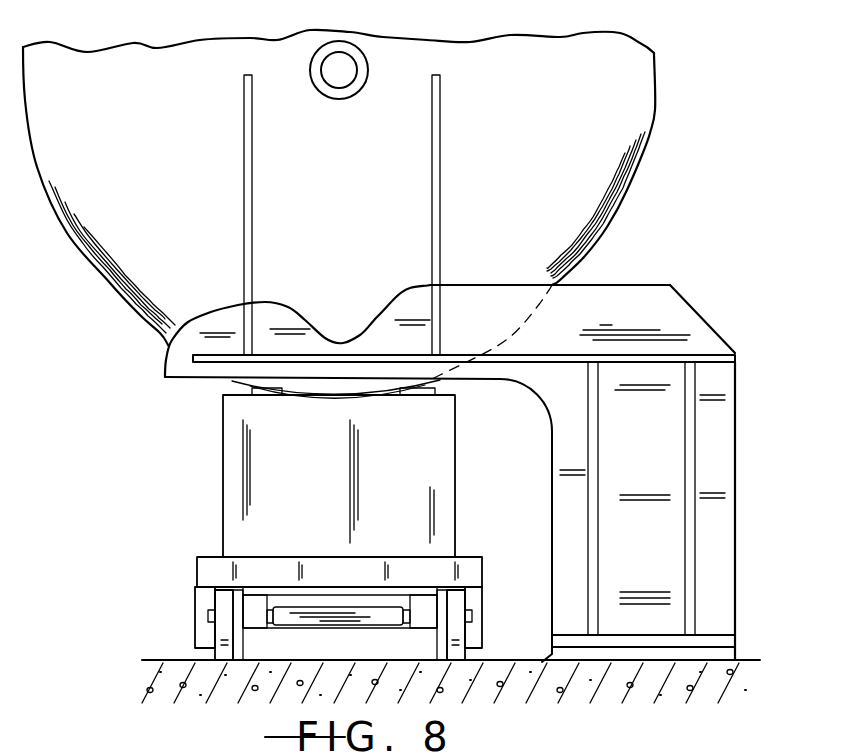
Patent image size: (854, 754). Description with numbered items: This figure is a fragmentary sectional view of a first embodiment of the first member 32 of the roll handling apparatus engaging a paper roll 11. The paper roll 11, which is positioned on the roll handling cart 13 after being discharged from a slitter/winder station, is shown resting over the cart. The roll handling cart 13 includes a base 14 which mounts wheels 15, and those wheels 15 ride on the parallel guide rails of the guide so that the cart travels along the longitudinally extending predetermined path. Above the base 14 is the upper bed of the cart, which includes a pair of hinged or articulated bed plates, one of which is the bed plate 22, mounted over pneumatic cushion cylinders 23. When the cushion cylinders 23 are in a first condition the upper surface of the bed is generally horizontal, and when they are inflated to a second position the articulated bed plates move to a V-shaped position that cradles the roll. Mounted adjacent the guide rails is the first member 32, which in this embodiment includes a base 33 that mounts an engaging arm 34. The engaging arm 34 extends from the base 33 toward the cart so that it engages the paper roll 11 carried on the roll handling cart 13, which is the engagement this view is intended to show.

The paper roll 11 is at (647, 137).
The roll handling cart 13 is at (212, 454).
The base 14 is at (210, 557).
The wheels 15 is at (197, 634).
The articulated bed plate 22 is at (277, 397).
The pneumatic cushion cylinder 23 is at (400, 397).
The first member 32 is at (748, 435).
The base 33 is at (737, 552).
The engaging arm 34 is at (477, 285).